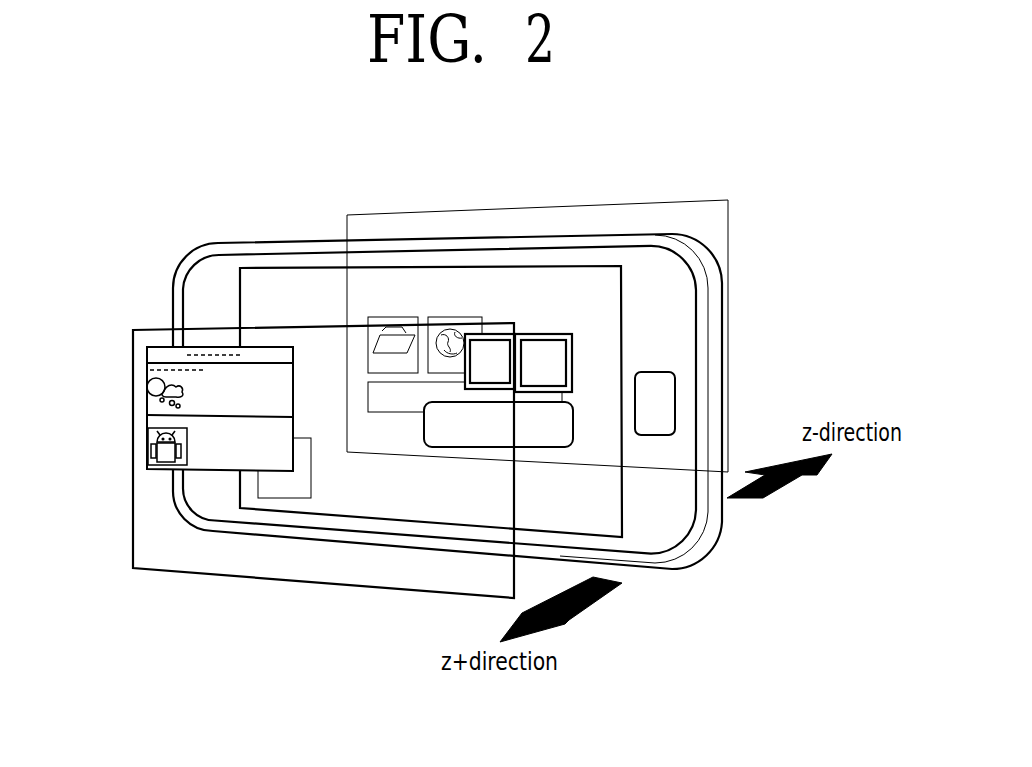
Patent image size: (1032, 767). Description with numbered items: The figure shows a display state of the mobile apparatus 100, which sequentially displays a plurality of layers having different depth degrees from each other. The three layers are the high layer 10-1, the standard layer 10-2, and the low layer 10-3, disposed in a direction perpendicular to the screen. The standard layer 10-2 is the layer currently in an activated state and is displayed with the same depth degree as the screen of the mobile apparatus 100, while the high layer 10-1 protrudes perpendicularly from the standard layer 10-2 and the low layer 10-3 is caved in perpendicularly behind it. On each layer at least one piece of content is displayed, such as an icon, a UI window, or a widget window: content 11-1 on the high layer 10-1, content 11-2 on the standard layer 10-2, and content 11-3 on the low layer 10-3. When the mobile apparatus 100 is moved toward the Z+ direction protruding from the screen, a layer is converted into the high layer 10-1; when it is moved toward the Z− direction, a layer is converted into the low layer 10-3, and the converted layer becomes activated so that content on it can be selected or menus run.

The mobile apparatus 100 is at (705, 257).
The high layer 10-1 is at (133, 452).
The standard layer 10-2 is at (268, 277).
The low layer 10-3 is at (487, 215).
The content 11-1 is at (147, 350).
The content 11-2 is at (570, 350).
The content 11-3 is at (400, 318).